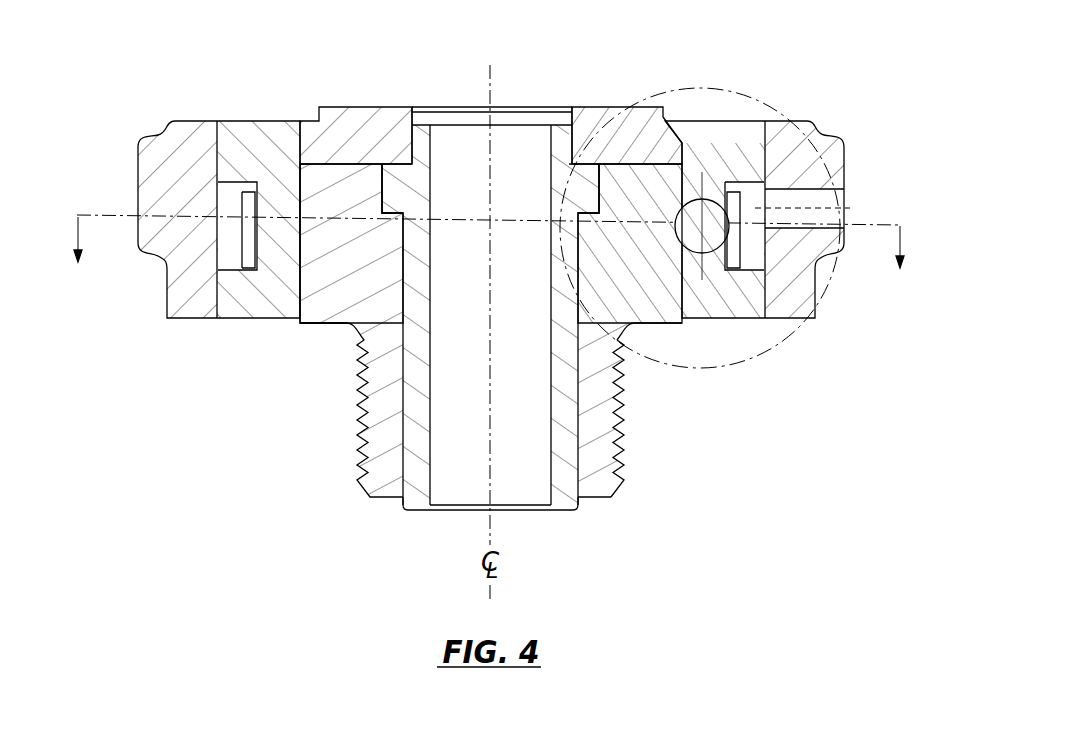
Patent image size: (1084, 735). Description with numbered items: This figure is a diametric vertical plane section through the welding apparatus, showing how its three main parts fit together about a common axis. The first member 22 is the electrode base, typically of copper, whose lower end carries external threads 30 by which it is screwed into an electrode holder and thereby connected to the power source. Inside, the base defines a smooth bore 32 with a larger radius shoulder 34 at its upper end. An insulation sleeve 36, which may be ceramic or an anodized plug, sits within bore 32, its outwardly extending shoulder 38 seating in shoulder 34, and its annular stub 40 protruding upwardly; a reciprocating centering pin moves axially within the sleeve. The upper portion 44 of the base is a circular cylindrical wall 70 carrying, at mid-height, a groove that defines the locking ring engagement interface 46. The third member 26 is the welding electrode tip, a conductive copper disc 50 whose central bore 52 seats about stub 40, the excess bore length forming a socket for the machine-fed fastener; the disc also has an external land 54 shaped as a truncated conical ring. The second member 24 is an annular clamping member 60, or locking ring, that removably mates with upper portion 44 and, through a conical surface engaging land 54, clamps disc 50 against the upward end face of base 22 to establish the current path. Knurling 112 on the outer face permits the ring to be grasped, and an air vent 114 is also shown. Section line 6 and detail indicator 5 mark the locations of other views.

The first member 22 is at (385, 457).
The second member 24 is at (163, 293).
The third member 26 is at (647, 114).
The external threads 30 is at (354, 427).
The smooth bore 32 is at (583, 418).
The shoulder 34 is at (393, 217).
The insulation sleeve 36 is at (565, 508).
The outwardly extending shoulder 38 is at (402, 155).
The annular stub 40 is at (548, 145).
The upper portion 44 is at (298, 270).
The locking ring engagement interface 46 is at (298, 213).
The copper disc 50 is at (342, 122).
The central bore 52 is at (588, 128).
The external land 54 is at (373, 107).
The annular clamping member 60 is at (235, 122).
The wall 70 is at (670, 287).
The knurling 112 is at (160, 200).
The air vent 114 is at (862, 204).
The detail view 5 indicator 5 is at (787, 335).
The section line 6 is at (487, 260).